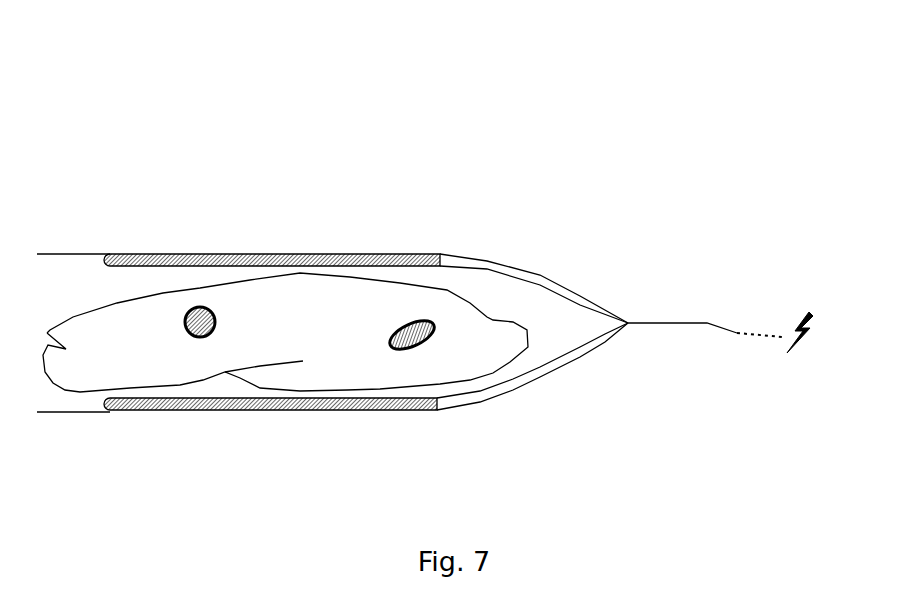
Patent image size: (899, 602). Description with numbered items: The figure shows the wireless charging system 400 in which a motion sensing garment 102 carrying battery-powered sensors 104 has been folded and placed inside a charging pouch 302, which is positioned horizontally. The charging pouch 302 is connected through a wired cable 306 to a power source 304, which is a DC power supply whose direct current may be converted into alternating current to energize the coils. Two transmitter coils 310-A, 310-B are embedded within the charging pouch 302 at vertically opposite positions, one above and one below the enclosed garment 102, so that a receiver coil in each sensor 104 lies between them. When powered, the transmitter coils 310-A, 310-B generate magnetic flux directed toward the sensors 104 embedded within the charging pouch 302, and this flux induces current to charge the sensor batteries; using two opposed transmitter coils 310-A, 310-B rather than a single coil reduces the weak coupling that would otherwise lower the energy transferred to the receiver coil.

The wireless charging system 400 is at (98, 121).
The garment 102 is at (67, 335).
The sensors 104 is at (331, 263).
The charging pouch 302 is at (547, 280).
The power source 304 is at (814, 317).
The wired cable 306 is at (707, 323).
The transmitter coil 310-A is at (230, 255).
The transmitter coil 310-B is at (377, 413).